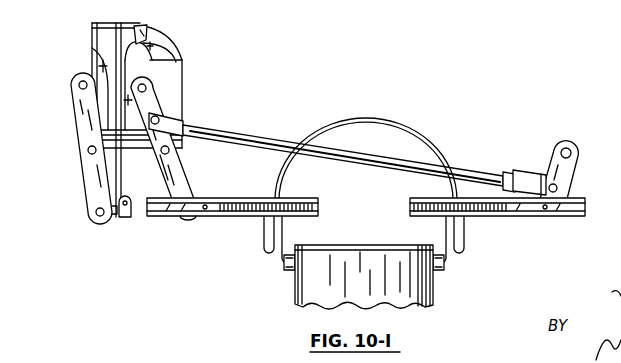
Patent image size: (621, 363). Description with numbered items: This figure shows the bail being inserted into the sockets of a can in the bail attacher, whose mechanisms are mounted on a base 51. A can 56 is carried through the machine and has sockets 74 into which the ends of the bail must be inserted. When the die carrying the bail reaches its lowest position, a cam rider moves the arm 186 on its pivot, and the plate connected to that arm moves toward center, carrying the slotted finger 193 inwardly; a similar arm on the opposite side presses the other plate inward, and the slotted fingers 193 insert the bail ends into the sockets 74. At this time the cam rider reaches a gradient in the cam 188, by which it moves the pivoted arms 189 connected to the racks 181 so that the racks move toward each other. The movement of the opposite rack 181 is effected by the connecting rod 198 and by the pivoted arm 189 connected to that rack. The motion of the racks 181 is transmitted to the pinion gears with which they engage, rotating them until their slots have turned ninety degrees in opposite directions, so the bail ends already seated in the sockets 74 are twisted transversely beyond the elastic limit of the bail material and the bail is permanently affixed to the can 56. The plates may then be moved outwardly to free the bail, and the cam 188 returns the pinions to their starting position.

The base 51 is at (536, 0).
The can 56 is at (430, 294).
The socket 74 is at (291, 270).
The rack 181 is at (245, 217).
The arm 186 is at (90, 168).
The cam 188 is at (134, 25).
The pivoted arm 189 is at (186, 186).
The slotted finger 193 is at (285, 234).
The connecting rod 198 is at (230, 142).